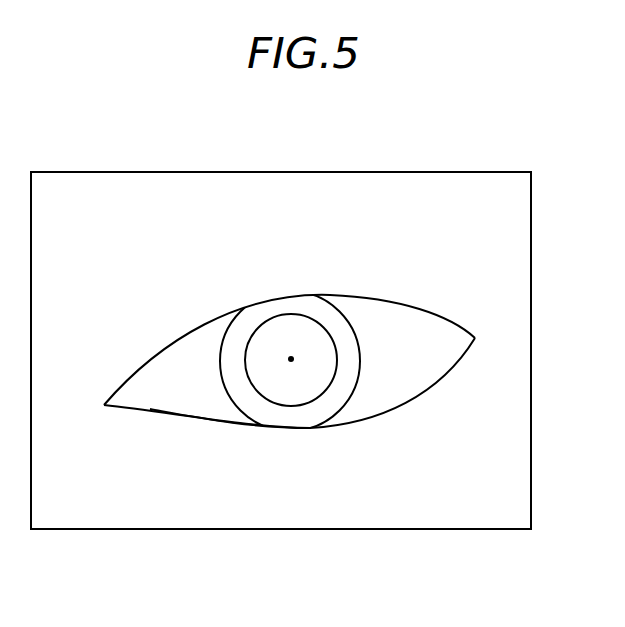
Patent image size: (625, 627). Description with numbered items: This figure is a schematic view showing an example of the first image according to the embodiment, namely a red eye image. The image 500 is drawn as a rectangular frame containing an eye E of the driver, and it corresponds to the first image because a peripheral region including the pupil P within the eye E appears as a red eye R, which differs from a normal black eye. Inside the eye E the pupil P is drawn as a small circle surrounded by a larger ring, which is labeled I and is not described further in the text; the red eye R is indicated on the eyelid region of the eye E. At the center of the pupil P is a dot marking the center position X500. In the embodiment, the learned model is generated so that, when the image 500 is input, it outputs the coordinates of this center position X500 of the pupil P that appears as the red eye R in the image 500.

The image 500 is at (451, 156).
The eye E is at (474, 308).
The iris I is at (362, 401).
The pupil P is at (289, 300).
The center position X500 is at (291, 362).
The red eye R is at (224, 434).